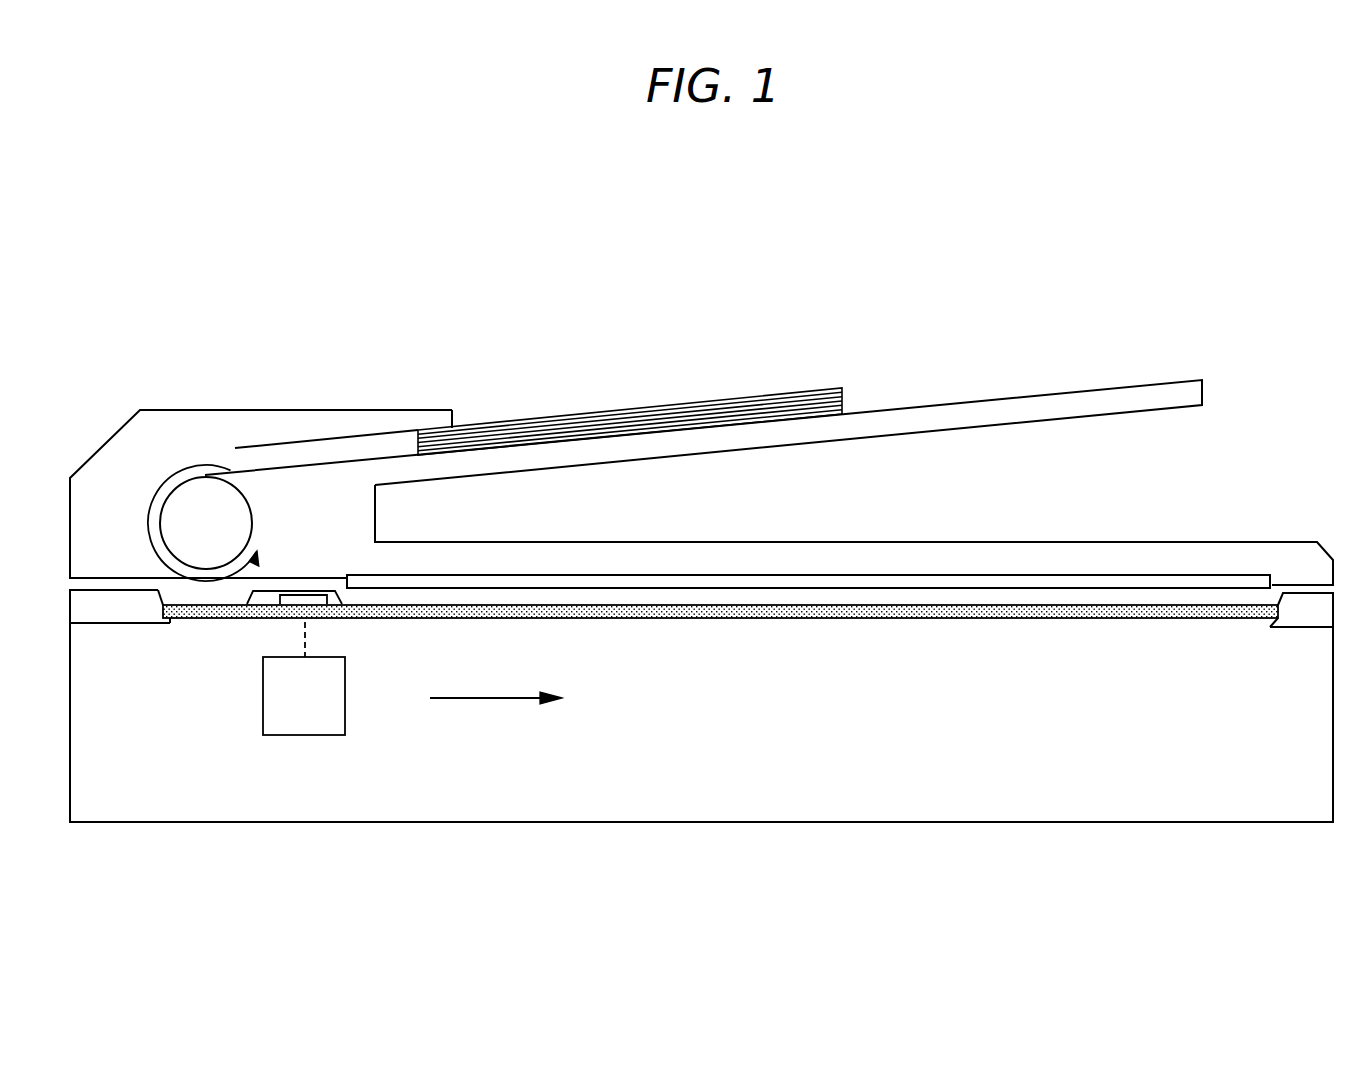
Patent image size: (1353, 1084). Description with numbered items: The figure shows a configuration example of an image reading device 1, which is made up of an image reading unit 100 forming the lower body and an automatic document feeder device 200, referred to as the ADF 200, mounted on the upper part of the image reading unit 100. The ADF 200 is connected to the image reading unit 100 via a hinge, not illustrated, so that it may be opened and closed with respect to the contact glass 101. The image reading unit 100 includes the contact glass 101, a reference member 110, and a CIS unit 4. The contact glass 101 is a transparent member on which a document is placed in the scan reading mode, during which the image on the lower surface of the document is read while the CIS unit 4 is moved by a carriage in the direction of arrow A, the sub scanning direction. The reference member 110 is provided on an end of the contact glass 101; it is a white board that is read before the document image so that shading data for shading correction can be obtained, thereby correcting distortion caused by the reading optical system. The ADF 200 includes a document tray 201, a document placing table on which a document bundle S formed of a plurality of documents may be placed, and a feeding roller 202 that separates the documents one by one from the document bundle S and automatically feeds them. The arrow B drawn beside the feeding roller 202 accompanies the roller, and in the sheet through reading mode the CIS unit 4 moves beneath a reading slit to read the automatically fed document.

The image reading device 1 is at (590, 212).
The automatic document feeder device 200 is at (752, 357).
The document tray 201 is at (940, 415).
The feeding roller 202 is at (200, 502).
The document bundle S is at (594, 415).
The roller rotation direction B is at (212, 523).
The image reading unit 100 is at (610, 850).
The contact glass 101 is at (673, 610).
The reference member 110 is at (317, 598).
The CIS unit 4 is at (272, 680).
The arrow A is at (496, 686).